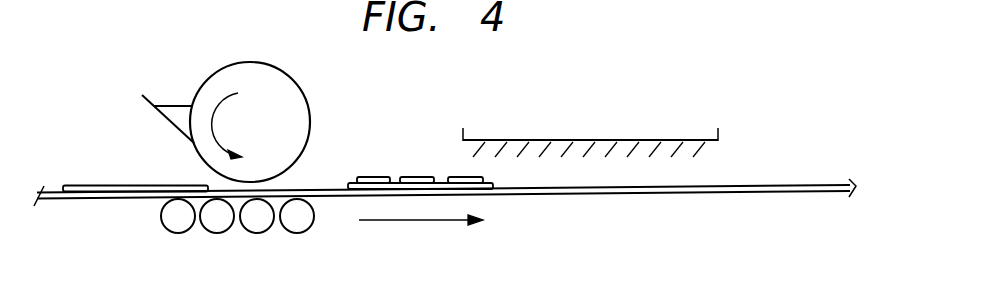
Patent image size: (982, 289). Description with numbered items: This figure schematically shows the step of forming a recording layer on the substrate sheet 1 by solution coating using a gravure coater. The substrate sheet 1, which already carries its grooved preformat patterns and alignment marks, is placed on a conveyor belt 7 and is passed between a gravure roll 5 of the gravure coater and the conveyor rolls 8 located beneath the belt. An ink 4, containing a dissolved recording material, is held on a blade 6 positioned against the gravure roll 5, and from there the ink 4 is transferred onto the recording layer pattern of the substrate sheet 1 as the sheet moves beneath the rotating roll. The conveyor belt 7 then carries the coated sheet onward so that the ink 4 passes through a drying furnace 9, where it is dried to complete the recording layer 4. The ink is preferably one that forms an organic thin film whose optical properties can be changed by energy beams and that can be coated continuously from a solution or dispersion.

The substrate sheet 1 is at (271, 158).
The recording layer 4 is at (318, 120).
The gravure roll 5 is at (263, 120).
The blade 6 is at (141, 105).
The conveyor belt 7 is at (445, 216).
The conveyor rolls 8 is at (223, 232).
The drying furnace 9 is at (590, 112).